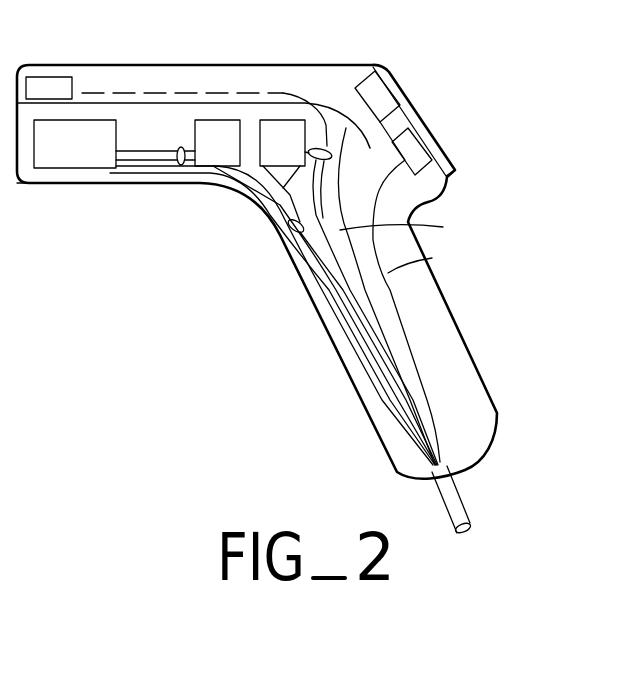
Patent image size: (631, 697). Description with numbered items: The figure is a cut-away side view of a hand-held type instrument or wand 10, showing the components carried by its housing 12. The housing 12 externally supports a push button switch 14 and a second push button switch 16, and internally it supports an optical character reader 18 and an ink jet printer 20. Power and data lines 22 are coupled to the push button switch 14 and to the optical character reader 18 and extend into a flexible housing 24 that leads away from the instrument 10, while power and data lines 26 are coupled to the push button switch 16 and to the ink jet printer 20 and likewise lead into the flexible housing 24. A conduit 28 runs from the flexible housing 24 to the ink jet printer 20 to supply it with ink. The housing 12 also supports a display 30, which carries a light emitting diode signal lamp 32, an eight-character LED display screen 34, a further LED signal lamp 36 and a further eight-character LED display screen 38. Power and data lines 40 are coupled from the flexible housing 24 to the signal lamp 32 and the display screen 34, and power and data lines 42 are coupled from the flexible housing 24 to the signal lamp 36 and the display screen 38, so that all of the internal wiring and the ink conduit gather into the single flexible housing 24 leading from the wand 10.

The hand-held type instrument or wand 10 is at (450, 113).
The housing 12 is at (161, 180).
The push button switch 14 is at (272, 207).
The push button switch 16 is at (218, 167).
The optical character reader 18 is at (53, 77).
The ink jet printer 20 is at (63, 168).
The power and data lines 22 is at (327, 148).
The flexible housing 24 is at (440, 498).
The power and data lines 26 is at (178, 148).
The conduit 28 is at (146, 168).
The display 30 is at (414, 101).
The light emitting diode (LED) signal lamp 32 is at (407, 70).
The 8-character LED display screen 34 is at (378, 92).
The LED signal lamp 36 is at (455, 147).
The 8-character LED display screen 38 is at (418, 152).
The power and data lines 40 is at (443, 227).
The power and data lines 42 is at (432, 258).